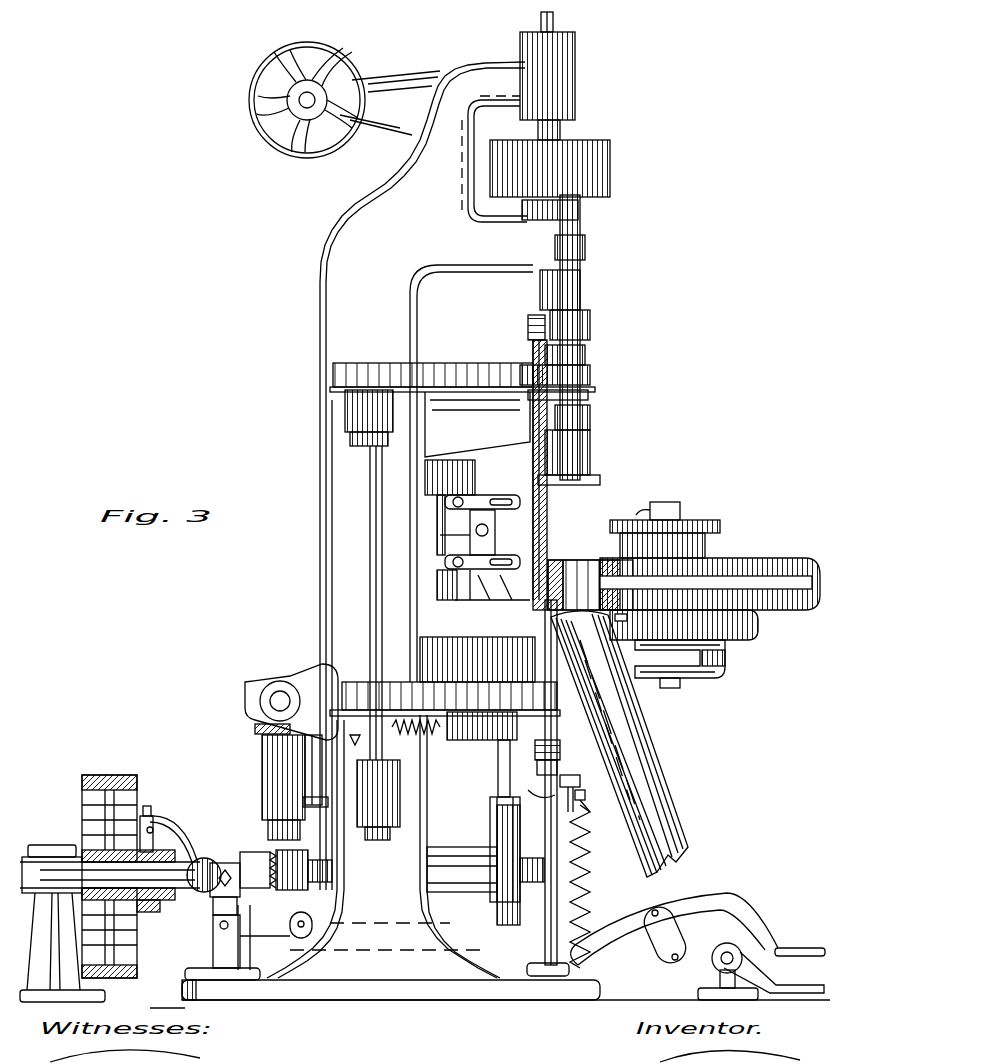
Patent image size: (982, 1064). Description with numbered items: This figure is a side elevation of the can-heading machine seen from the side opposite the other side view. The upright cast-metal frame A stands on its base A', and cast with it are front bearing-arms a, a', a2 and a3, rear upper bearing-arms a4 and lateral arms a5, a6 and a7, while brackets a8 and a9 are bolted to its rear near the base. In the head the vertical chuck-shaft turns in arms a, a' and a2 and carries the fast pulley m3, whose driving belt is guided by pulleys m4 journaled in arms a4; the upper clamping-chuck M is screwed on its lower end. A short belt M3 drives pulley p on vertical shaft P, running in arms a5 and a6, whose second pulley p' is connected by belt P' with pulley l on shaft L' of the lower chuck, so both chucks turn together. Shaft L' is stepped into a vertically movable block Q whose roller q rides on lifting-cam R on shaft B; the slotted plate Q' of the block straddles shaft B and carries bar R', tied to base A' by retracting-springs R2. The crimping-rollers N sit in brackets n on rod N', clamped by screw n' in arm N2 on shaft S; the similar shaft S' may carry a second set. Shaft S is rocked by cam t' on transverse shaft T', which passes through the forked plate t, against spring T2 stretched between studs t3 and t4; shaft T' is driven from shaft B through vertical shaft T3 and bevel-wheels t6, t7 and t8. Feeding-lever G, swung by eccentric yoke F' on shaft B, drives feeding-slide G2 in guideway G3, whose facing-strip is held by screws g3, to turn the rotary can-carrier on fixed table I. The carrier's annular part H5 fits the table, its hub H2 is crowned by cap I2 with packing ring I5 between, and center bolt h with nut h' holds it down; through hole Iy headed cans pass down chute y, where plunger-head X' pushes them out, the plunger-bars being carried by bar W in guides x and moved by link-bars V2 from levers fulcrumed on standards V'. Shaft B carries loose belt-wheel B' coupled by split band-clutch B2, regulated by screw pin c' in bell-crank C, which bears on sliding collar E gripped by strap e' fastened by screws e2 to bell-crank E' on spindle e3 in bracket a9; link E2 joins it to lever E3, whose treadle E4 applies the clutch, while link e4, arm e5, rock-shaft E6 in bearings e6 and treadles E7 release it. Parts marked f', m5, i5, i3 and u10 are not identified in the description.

The frame A is at (400, 520).
The base A' is at (490, 1009).
The guide pulleys m4 is at (252, 132).
The rear upper bearing-arms a4 is at (380, 70).
The front horizontal bearing-arm a is at (562, 76).
The fast pulley m3 is at (612, 170).
The front horizontal bearing-arm a' is at (569, 210).
The guide x is at (582, 292).
The horizontal bar W is at (592, 325).
The collar f' is at (583, 351).
The gear m5 is at (592, 380).
The front horizontal bearing-arm a2 is at (590, 398).
The upper clamping-chuck M is at (590, 458).
The plunger-head X' is at (586, 479).
The vertical link-bars V2 is at (535, 362).
The short belt M3 is at (466, 362).
The pulley p is at (369, 390).
The lateral bearing-arm a5 is at (345, 425).
The second pulley p' is at (396, 656).
The front bearing-arm a3 is at (477, 424).
The vertical shaft P is at (340, 567).
The crimping-rollers N is at (500, 514).
The vertical rod N' is at (488, 504).
The bifurcated brackets n is at (509, 503).
The clamping screw n' is at (469, 538).
The horizontal arm N2 is at (468, 540).
The vertical shaft S is at (420, 525).
The vertical shaft S' is at (441, 585).
The screws g3 is at (460, 602).
The feeding-slide G2 is at (500, 600).
The guideway G3 is at (516, 600).
The discharge hole Iy is at (575, 585).
The nut h' is at (676, 503).
The pin i5 is at (637, 500).
The circular cap I2 is at (720, 522).
The packing ring I5 is at (705, 540).
The annular hub H2 is at (705, 548).
The annular downward part H5 is at (792, 558).
The center bolt h is at (693, 631).
The table I is at (772, 614).
The belt P' is at (445, 699).
The gear i3 is at (534, 668).
The lateral bearing-arm a7 is at (470, 740).
The stud t3 is at (442, 740).
The retracting-spring T2 is at (398, 780).
The stud t4 is at (355, 742).
The lateral bearing-arm a6 is at (378, 840).
The transverse shaft T' is at (291, 691).
The plate t is at (282, 701).
The horizontal bearing-bracket a8 is at (323, 730).
The cam t' is at (230, 707).
The bevel-wheel t6 is at (247, 724).
The cylinder u10 is at (262, 760).
The bevel-wheel t8 is at (262, 835).
The strap e' is at (220, 831).
The bevel-wheel t7 is at (305, 818).
The chute y is at (662, 782).
The pulley l is at (545, 770).
The vertically-movable block Q is at (535, 761).
The antifriction-roller q is at (536, 788).
The vertical shaft L' is at (577, 775).
The slotted plate Q' is at (563, 799).
The horizontal bar R' is at (593, 813).
The feeding-lever G is at (498, 768).
The fixed standards V' is at (480, 849).
The lifting-cam R is at (514, 866).
The ring or yoke F' is at (485, 886).
The retracting-springs R2 is at (595, 895).
The loose belt-wheel B' is at (128, 801).
The horizontal shaft B is at (128, 933).
The split band-clutch B2 is at (142, 950).
The screw-threaded pin c' is at (154, 801).
The bell-crank lever C is at (176, 816).
The sliding collar E is at (204, 839).
The bell-crank lever E' is at (210, 916).
The screws e2 is at (221, 889).
The spindle e3 is at (220, 927).
The horizontal bracket a9 is at (212, 964).
The link E2 is at (290, 938).
The vertical connecting-shaft T3 is at (332, 870).
The clutching lever E3 is at (618, 930).
The treadle E4 is at (800, 945).
The treadles E7 is at (800, 982).
The arm e5 is at (727, 945).
The rock-shaft E6 is at (735, 950).
The link e4 is at (680, 940).
The bearings e6 is at (718, 980).